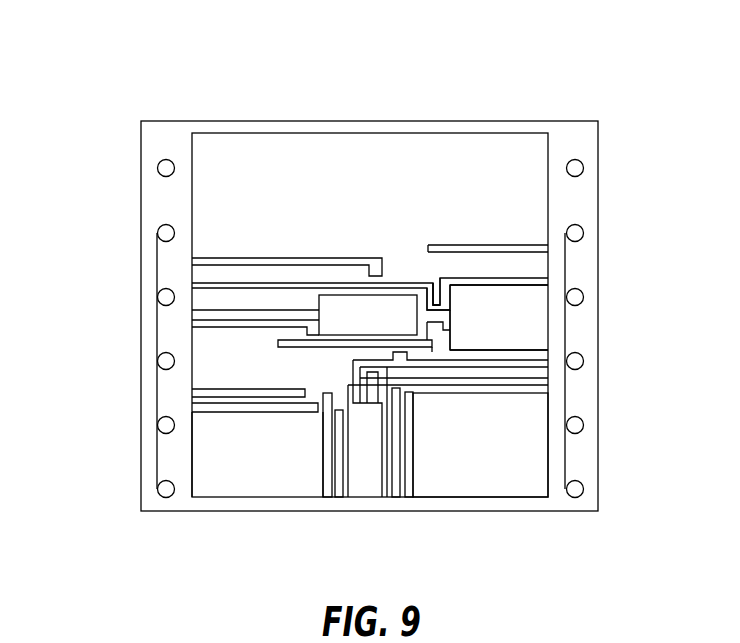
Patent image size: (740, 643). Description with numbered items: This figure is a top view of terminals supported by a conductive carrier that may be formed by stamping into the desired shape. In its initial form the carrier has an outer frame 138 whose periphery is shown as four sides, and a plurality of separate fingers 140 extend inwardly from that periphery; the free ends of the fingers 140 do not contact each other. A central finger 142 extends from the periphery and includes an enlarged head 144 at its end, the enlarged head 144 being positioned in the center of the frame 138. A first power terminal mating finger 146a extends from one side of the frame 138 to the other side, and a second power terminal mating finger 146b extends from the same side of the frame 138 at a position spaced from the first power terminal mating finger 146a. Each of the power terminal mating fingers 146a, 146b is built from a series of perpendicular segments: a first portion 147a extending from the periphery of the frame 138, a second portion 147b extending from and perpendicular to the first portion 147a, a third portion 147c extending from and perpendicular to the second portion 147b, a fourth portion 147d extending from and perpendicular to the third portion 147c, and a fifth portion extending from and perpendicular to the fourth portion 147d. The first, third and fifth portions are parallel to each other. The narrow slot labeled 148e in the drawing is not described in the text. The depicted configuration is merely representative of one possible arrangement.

The outer frame 138 is at (272, 128).
The central finger 142 is at (218, 315).
The enlarged head 144 is at (380, 305).
The slot 148e is at (437, 300).
The fourth portion 147d is at (433, 283).
The first power terminal mating finger 146a is at (521, 278).
The first portion 147a is at (493, 288).
The second portion 147b is at (450, 298).
The second power terminal mating finger 146b is at (520, 350).
The third portion 147c is at (440, 307).
The fingers 140 is at (495, 385).